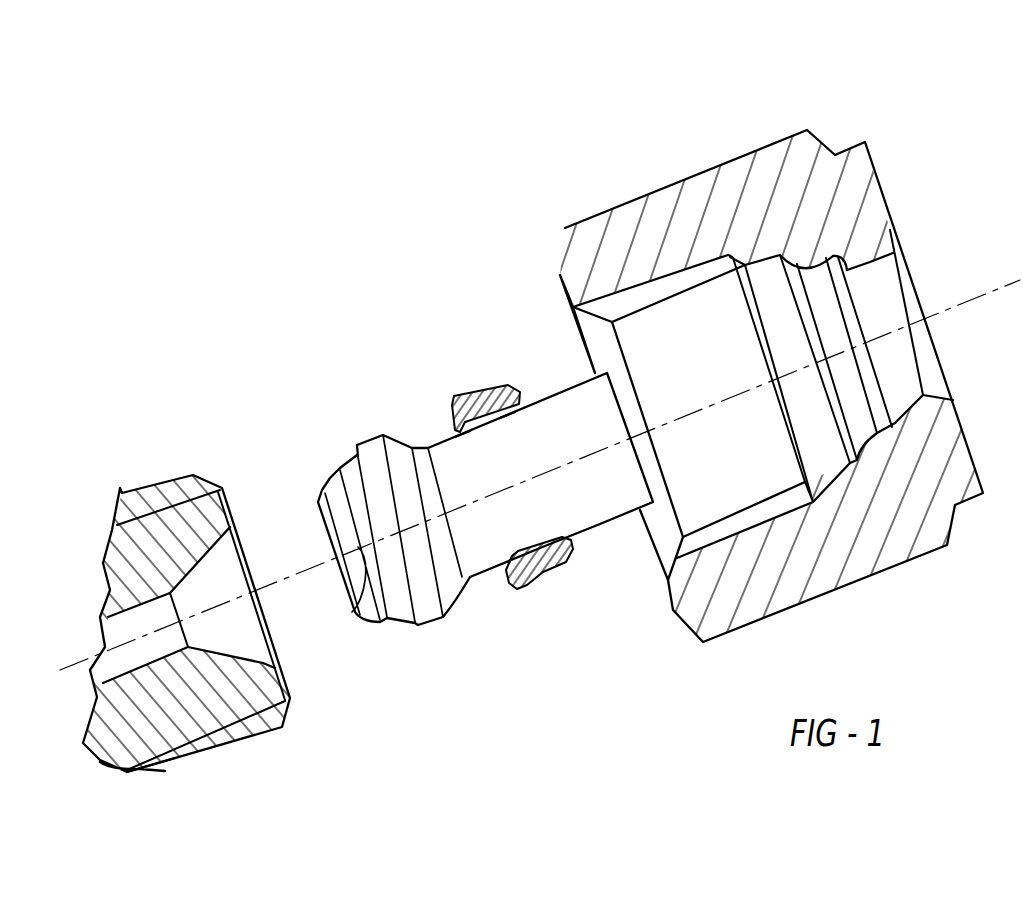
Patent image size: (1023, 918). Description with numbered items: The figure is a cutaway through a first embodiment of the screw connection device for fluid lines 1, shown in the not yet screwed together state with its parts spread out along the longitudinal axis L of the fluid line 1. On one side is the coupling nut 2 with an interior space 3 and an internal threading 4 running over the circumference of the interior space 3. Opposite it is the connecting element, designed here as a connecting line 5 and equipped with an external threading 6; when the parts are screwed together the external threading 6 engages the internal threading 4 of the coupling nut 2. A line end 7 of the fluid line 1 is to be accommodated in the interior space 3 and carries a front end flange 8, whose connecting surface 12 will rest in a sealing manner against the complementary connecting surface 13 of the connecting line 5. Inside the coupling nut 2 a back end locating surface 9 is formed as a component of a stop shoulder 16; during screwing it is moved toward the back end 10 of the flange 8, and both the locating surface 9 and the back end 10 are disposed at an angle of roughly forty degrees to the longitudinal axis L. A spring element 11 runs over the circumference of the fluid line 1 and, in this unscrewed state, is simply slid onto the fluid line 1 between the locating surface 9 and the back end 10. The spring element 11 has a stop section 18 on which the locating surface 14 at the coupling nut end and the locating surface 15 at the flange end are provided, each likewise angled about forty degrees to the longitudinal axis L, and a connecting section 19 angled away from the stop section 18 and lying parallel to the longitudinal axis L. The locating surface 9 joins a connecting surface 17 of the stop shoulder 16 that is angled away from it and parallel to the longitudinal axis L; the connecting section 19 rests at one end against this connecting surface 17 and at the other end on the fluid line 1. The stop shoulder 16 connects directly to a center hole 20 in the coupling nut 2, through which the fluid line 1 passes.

The fluid line 1 is at (461, 471).
The coupling nut 2 is at (786, 340).
The interior space 3 is at (690, 327).
The internal threading 4 is at (638, 300).
The connecting line 5 is at (148, 728).
The external threading 6 is at (186, 656).
The line end 7 is at (593, 500).
The flange 8 is at (430, 607).
The locating surface 9 is at (793, 252).
The back end 10 is at (395, 437).
The spring element 11 is at (563, 582).
The connecting surface 12 is at (326, 481).
The complementary connecting surface 13 is at (208, 548).
The locating surface at the coupling nut end 14 is at (475, 393).
The locating surface at the flange end 15 is at (515, 553).
The stop shoulder 16 is at (853, 212).
The connecting surface 17 is at (868, 268).
The stop section 18 is at (463, 407).
The connecting section 19 is at (500, 397).
The center hole 20 is at (885, 312).
The longitudinal axis L is at (350, 617).